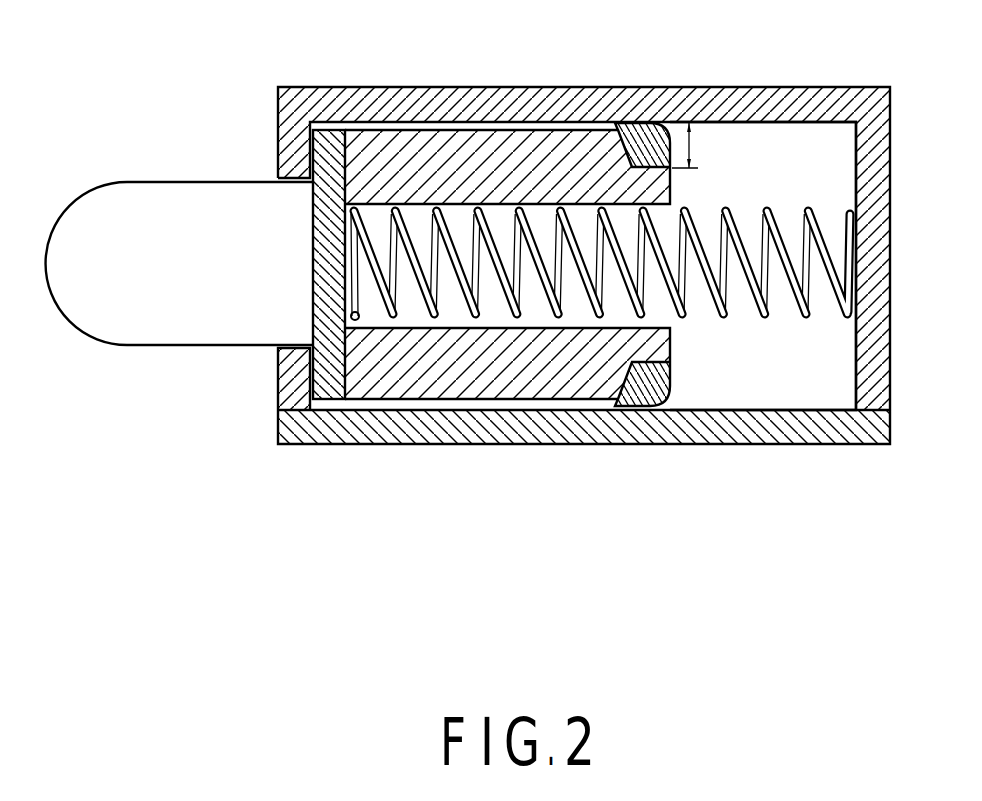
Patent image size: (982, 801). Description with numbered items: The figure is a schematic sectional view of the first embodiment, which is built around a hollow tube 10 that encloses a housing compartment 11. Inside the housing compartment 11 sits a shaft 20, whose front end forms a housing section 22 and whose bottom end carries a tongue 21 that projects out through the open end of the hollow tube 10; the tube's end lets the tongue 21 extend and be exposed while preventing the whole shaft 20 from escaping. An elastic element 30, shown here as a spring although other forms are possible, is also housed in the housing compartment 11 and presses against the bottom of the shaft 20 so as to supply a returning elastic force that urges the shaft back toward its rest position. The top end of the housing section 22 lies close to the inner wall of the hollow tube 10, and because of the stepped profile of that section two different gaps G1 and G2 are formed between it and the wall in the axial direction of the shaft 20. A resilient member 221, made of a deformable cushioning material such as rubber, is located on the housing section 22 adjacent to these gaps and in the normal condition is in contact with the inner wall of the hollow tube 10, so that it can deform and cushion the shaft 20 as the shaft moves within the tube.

The hollow tube 10 is at (616, 91).
The housing compartment 11 is at (770, 133).
The shaft 20 is at (361, 313).
The tongue 21 is at (159, 329).
The housing section 22 is at (537, 389).
The resilient member 221 is at (645, 394).
The elastic element 30 is at (766, 320).
The gap G1 is at (517, 135).
The gap G2 is at (691, 137).